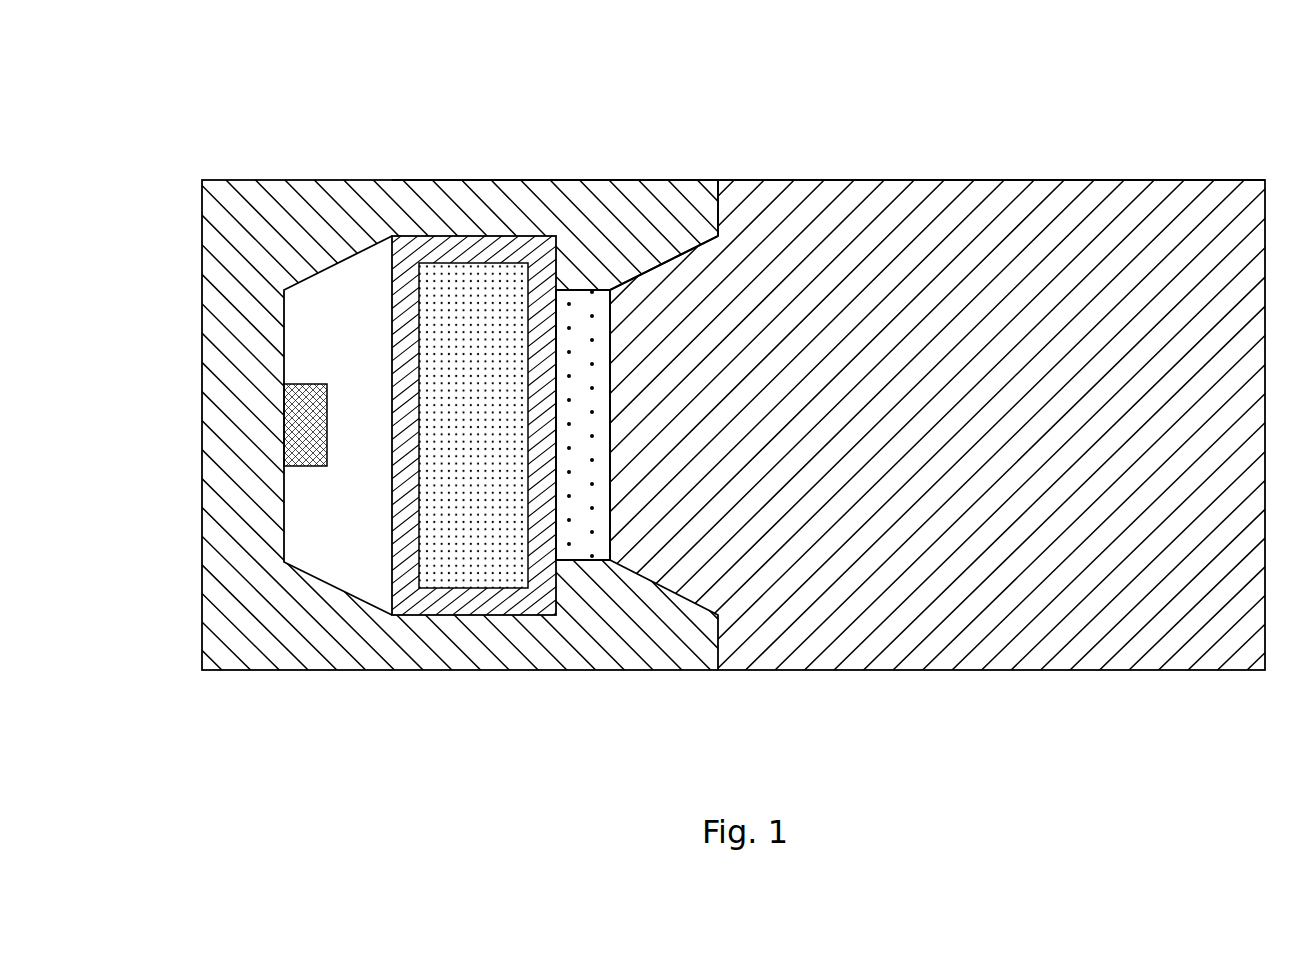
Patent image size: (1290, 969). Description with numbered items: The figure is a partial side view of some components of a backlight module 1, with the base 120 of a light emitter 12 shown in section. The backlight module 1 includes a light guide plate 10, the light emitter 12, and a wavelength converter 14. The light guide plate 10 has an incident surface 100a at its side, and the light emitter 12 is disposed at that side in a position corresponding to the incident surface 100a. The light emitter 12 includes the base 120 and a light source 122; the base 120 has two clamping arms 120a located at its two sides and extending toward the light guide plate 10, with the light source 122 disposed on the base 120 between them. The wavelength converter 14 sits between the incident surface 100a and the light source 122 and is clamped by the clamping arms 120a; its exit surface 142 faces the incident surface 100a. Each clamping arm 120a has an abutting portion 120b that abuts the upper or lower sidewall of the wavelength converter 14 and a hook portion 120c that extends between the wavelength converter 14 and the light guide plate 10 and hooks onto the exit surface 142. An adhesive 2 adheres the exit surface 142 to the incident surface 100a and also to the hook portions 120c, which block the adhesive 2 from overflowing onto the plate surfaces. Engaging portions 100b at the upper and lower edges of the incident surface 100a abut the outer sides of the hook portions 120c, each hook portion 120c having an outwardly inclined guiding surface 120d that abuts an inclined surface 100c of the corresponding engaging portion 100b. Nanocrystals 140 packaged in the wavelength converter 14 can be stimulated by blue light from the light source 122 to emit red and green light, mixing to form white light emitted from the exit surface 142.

The backlight module 1 is at (220, 122).
The adhesive 2 is at (583, 397).
The light guide plate 10 is at (1162, 208).
The incident surface 100a is at (903, 180).
The engaging portions 100b is at (720, 218).
The inclined surface 100c is at (610, 358).
The light emitter 12 is at (98, 212).
The base 120 is at (210, 255).
The clamping arms 120a is at (460, 112).
The abutting portion 120b is at (450, 207).
The hook portion 120c is at (613, 205).
The guiding surface 120d is at (662, 260).
The light source 122 is at (287, 425).
The wavelength converter 14 is at (470, 608).
The nanocrystals 140 is at (442, 550).
The exit surface 142 is at (557, 538).